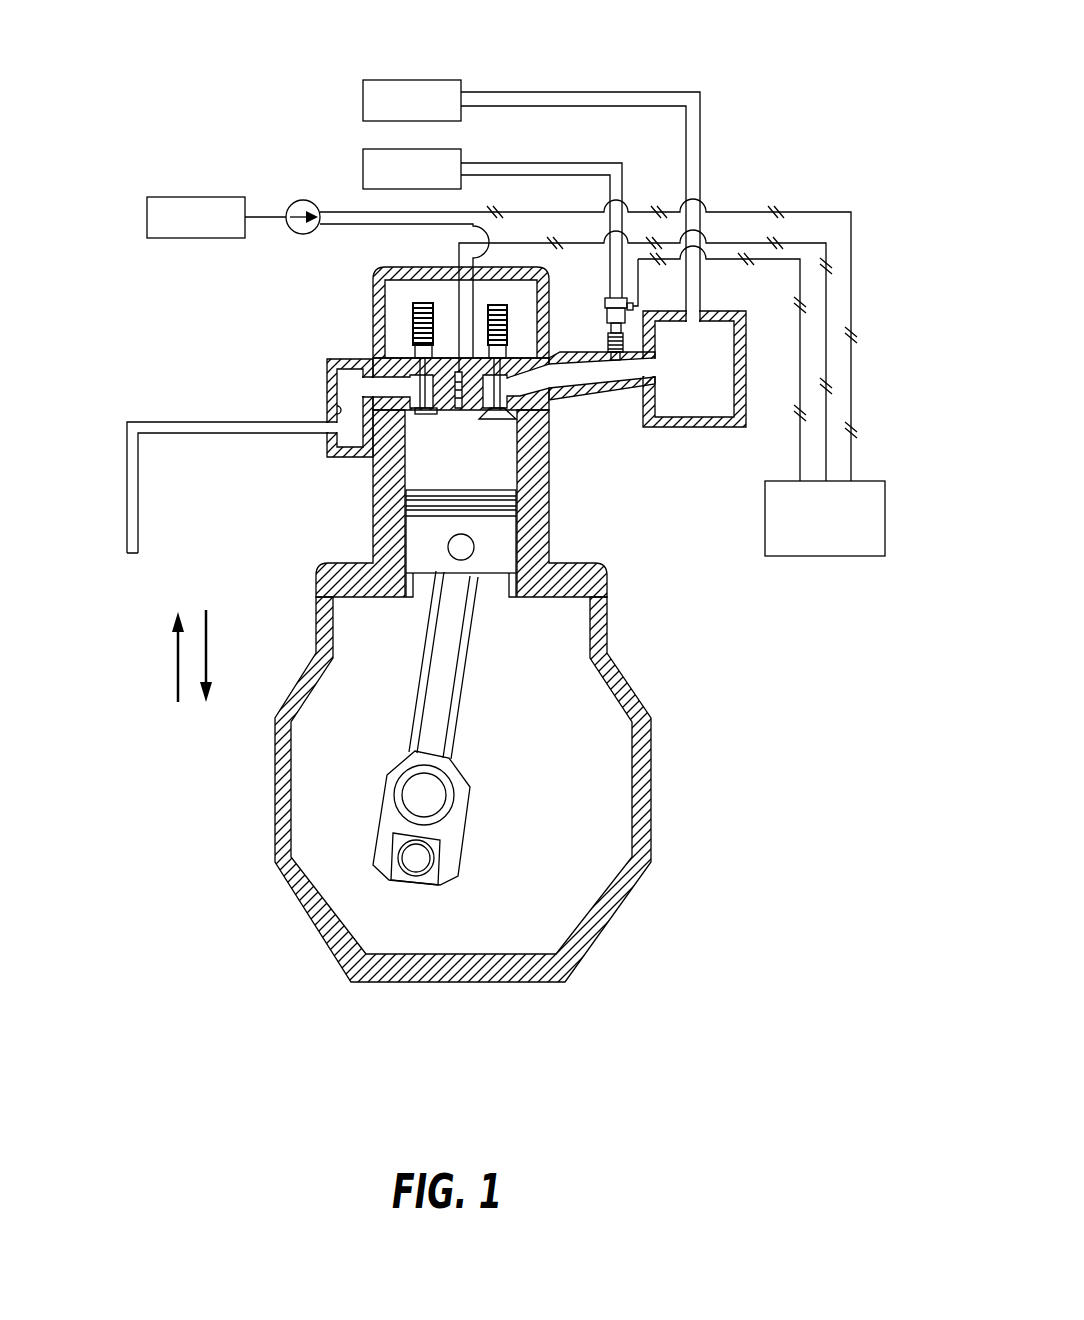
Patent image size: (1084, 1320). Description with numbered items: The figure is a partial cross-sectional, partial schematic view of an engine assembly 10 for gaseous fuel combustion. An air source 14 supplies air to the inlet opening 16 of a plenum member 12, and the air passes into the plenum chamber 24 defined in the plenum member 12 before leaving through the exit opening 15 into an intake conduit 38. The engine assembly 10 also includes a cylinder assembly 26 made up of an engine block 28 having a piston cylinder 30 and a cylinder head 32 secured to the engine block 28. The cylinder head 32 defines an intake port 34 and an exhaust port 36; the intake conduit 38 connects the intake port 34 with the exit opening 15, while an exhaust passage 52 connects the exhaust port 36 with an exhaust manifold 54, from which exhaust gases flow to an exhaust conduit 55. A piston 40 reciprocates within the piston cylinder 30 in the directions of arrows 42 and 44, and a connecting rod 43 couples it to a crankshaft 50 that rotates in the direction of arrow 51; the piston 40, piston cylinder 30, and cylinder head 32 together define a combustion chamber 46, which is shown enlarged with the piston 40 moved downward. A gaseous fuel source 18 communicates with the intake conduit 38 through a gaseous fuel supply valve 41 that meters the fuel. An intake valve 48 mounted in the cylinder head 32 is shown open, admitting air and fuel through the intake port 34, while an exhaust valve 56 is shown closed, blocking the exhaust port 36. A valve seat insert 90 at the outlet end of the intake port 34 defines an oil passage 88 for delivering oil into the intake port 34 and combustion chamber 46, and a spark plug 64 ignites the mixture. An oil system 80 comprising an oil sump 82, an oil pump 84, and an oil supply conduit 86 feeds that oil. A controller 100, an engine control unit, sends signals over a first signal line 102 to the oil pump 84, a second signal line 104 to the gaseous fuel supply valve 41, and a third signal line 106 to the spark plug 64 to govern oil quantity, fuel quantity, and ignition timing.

The engine assembly 10 is at (283, 68).
The plenum member 12 is at (746, 380).
The air source 14 is at (462, 86).
The exit opening 15 is at (652, 363).
The inlet opening 16 is at (697, 318).
The gaseous fuel source 18 is at (462, 154).
The plenum chamber 24 is at (689, 413).
The cylinder assembly 26 is at (330, 532).
The engine block 28 is at (322, 572).
The piston cylinder 30 is at (512, 478).
The cylinder head 32 is at (382, 385).
The intake port 34 is at (513, 358).
The exhaust port 36 is at (416, 410).
The intake conduit 38 is at (613, 373).
The piston 40 is at (507, 542).
The gaseous fuel supply valve 41 is at (632, 308).
The arrow 42 is at (175, 656).
The connecting rod 43 is at (445, 660).
The arrow 44 is at (207, 650).
The combustion chamber 46 is at (422, 477).
The intake valve 48 is at (500, 416).
The crankshaft 50 is at (453, 829).
The arrow 51 is at (442, 916).
The exhaust passage 52 is at (360, 388).
The exhaust manifold 54 is at (333, 408).
The exhaust conduit 55 is at (133, 505).
The exhaust valve 56 is at (427, 410).
The spark plug 64 is at (450, 380).
The oil system 80 is at (195, 245).
The oil sump 82 is at (147, 217).
The oil pump 84 is at (303, 235).
The oil supply conduit 86 is at (457, 222).
The oil passage 88 is at (480, 415).
The valve seat insert 90 is at (514, 404).
The controller 100 is at (826, 556).
The first signal line 102 is at (851, 383).
The second signal line 104 is at (800, 434).
The third signal line 106 is at (827, 302).